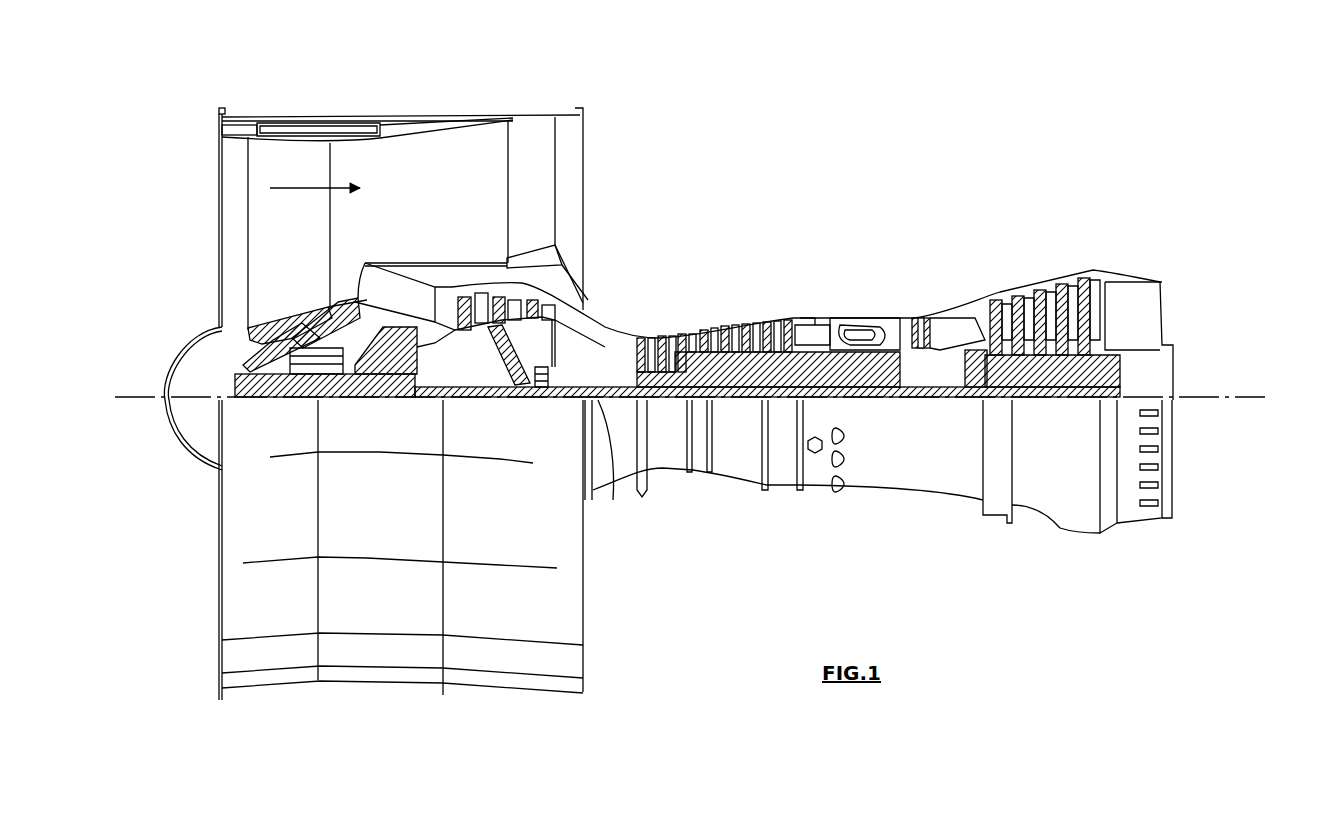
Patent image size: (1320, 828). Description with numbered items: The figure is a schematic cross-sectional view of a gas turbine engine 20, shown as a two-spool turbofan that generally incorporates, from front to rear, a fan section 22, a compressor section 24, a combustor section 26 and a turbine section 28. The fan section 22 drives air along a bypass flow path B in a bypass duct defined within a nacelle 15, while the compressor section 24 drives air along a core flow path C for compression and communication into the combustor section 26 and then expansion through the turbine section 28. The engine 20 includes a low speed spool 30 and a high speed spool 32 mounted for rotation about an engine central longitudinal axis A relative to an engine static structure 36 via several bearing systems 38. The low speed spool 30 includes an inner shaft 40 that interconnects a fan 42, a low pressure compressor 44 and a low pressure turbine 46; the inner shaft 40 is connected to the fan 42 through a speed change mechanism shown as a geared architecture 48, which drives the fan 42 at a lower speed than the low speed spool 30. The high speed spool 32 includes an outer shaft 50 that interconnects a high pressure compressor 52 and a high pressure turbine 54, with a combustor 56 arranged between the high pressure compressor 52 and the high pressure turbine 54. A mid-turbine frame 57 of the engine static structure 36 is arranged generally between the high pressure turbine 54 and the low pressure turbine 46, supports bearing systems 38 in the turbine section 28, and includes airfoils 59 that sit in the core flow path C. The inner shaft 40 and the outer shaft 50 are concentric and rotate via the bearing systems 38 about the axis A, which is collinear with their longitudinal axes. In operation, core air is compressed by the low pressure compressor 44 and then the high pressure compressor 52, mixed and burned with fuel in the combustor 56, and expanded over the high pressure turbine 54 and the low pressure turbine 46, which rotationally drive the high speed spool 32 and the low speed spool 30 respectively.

The gas turbine engine 20 is at (862, 163).
The fan section 22 is at (328, 104).
The nacelle 15 is at (400, 122).
The fan 42 is at (401, 407).
The bypass flow path B is at (304, 188).
The core flow path C is at (400, 296).
The low pressure compressor 44 is at (530, 300).
The compressor section 24 is at (634, 303).
The high pressure compressor 52 is at (707, 338).
The high speed spool 32 is at (783, 345).
The combustor section 26 is at (856, 297).
The combustor 56 is at (860, 342).
The high pressure turbine 54 is at (923, 318).
The mid-turbine frame 57 is at (965, 308).
The turbine section 28 is at (1005, 257).
The low pressure turbine 46 is at (1048, 280).
The airfoils 59 is at (985, 360).
The geared architecture 48 is at (410, 398).
The bearing systems 38 is at (538, 400).
The low speed spool 30 is at (742, 402).
The inner shaft 40 is at (610, 440).
The engine static structure 36 is at (782, 492).
The outer shaft 50 is at (868, 400).
The engine central longitudinal axis A is at (1250, 397).